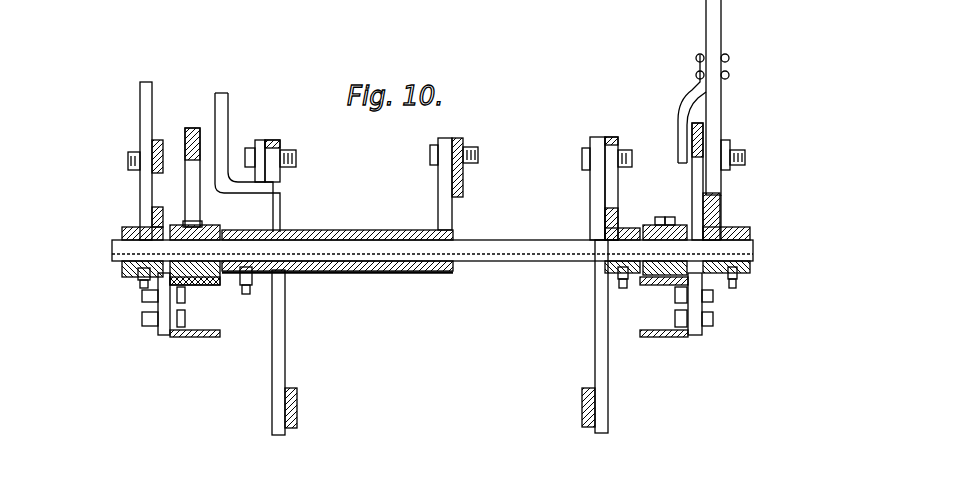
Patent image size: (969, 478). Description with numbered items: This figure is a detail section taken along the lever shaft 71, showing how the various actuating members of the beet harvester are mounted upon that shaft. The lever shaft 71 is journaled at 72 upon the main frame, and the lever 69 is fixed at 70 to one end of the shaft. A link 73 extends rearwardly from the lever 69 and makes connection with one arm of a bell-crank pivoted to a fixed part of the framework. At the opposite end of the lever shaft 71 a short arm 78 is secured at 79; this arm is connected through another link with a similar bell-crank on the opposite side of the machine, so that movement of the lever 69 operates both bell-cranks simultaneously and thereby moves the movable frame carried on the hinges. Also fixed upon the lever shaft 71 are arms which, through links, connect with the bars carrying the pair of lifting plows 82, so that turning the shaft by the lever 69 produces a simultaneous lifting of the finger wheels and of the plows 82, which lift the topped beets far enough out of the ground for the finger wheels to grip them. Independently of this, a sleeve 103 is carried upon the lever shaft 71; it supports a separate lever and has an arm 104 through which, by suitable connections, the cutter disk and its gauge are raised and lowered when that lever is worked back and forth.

The lever 69 is at (712, 28).
The fixing point of lever 70 is at (737, 288).
The lever shaft 71 is at (750, 247).
The journal 72 is at (650, 225).
The link 73 is at (726, 138).
The short arm 78 is at (152, 192).
The securing point of short arm 79 is at (137, 293).
The lifting plows 82 is at (334, 6).
The sleeve 103 is at (398, 272).
The arm of sleeve 104 is at (455, 200).